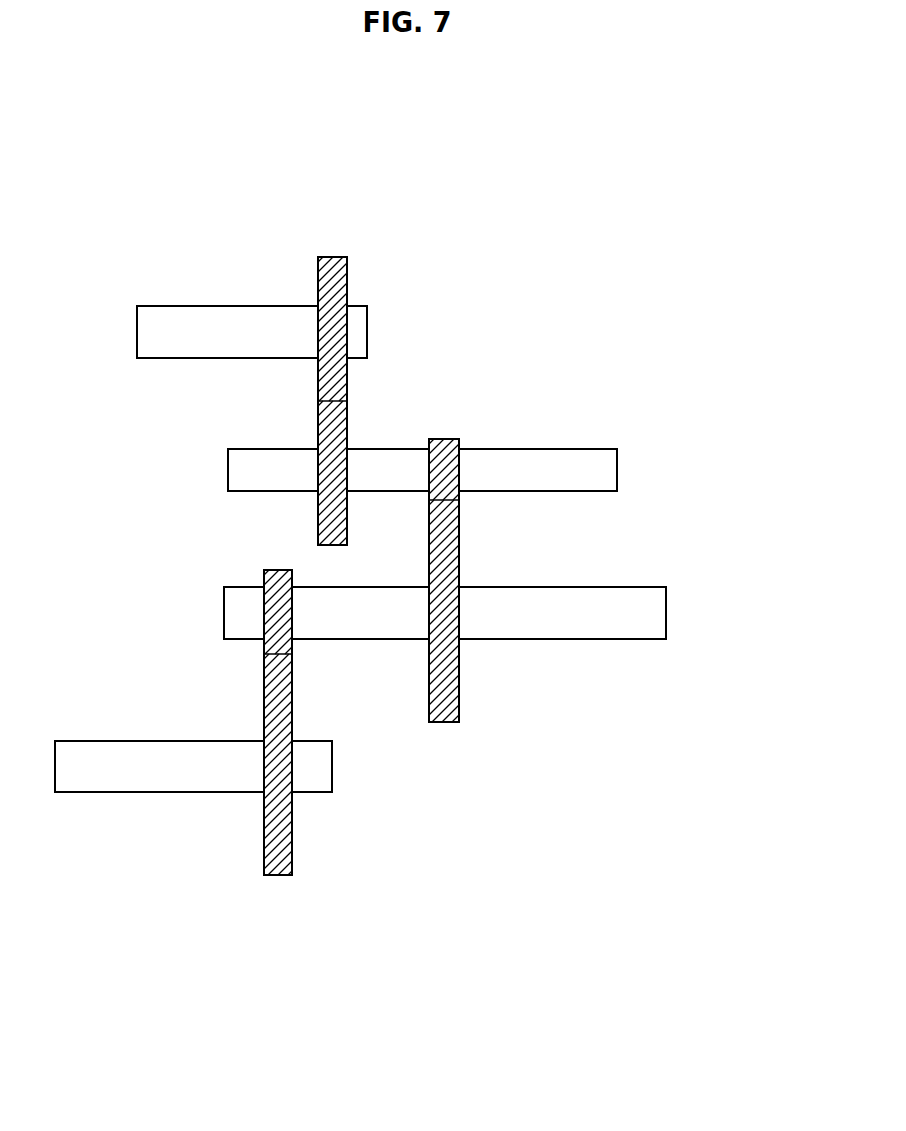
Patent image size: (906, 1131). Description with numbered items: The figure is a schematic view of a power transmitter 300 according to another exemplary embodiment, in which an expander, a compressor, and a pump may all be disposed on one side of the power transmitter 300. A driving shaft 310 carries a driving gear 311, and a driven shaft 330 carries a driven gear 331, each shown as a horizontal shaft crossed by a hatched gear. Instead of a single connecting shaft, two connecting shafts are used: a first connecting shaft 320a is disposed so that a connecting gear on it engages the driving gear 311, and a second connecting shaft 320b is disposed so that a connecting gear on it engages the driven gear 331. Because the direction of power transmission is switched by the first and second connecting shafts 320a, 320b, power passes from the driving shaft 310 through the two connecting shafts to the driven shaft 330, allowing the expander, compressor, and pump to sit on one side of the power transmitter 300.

The power transmitter 300 is at (398, 145).
The driving shaft 310 is at (137, 331).
The driving gear 311 is at (333, 257).
The first connecting shaft 320a is at (617, 467).
The second connecting shaft 320b is at (666, 611).
The driven shaft 330 is at (332, 765).
The driven gear 331 is at (279, 876).